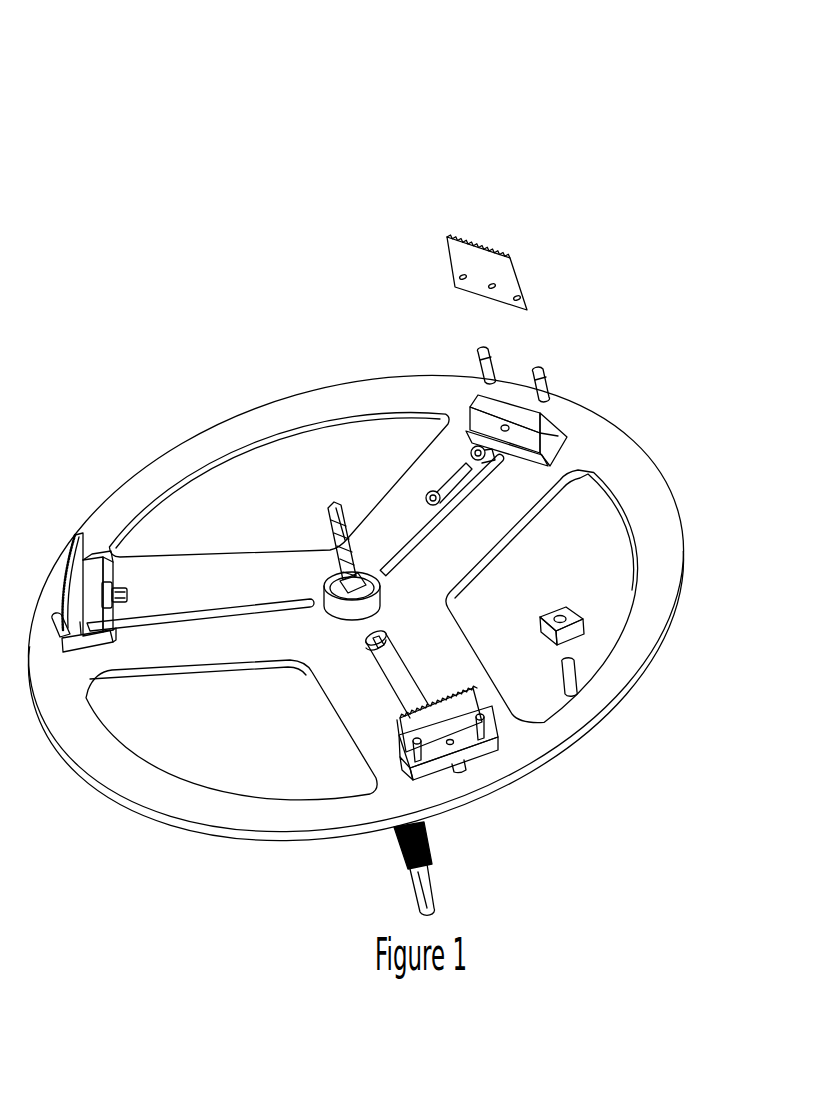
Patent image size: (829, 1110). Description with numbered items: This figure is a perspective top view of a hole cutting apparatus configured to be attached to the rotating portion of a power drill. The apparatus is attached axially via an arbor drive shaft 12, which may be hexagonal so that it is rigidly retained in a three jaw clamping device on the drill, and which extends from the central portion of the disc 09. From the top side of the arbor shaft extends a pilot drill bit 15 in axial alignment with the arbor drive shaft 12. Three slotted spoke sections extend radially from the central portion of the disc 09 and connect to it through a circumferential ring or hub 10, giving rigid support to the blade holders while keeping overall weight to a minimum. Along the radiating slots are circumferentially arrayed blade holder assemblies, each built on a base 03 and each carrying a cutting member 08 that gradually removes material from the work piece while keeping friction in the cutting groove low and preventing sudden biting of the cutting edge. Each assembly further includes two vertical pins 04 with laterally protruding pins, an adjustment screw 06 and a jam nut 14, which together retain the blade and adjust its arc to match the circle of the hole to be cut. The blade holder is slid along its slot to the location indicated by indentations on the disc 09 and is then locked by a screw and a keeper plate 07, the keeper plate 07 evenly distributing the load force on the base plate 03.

The blade holder assembly base 03 is at (573, 417).
The vertical pins 04 is at (545, 367).
The adjustment screw 06 is at (453, 497).
The keeper plate 07 is at (590, 637).
The cutting member 08 is at (520, 260).
The disc 09 is at (580, 745).
The hub 10 is at (323, 618).
The arbor drive shaft 12 is at (393, 845).
The jam nut 14 is at (490, 460).
The pilot drill bit 15 is at (323, 498).